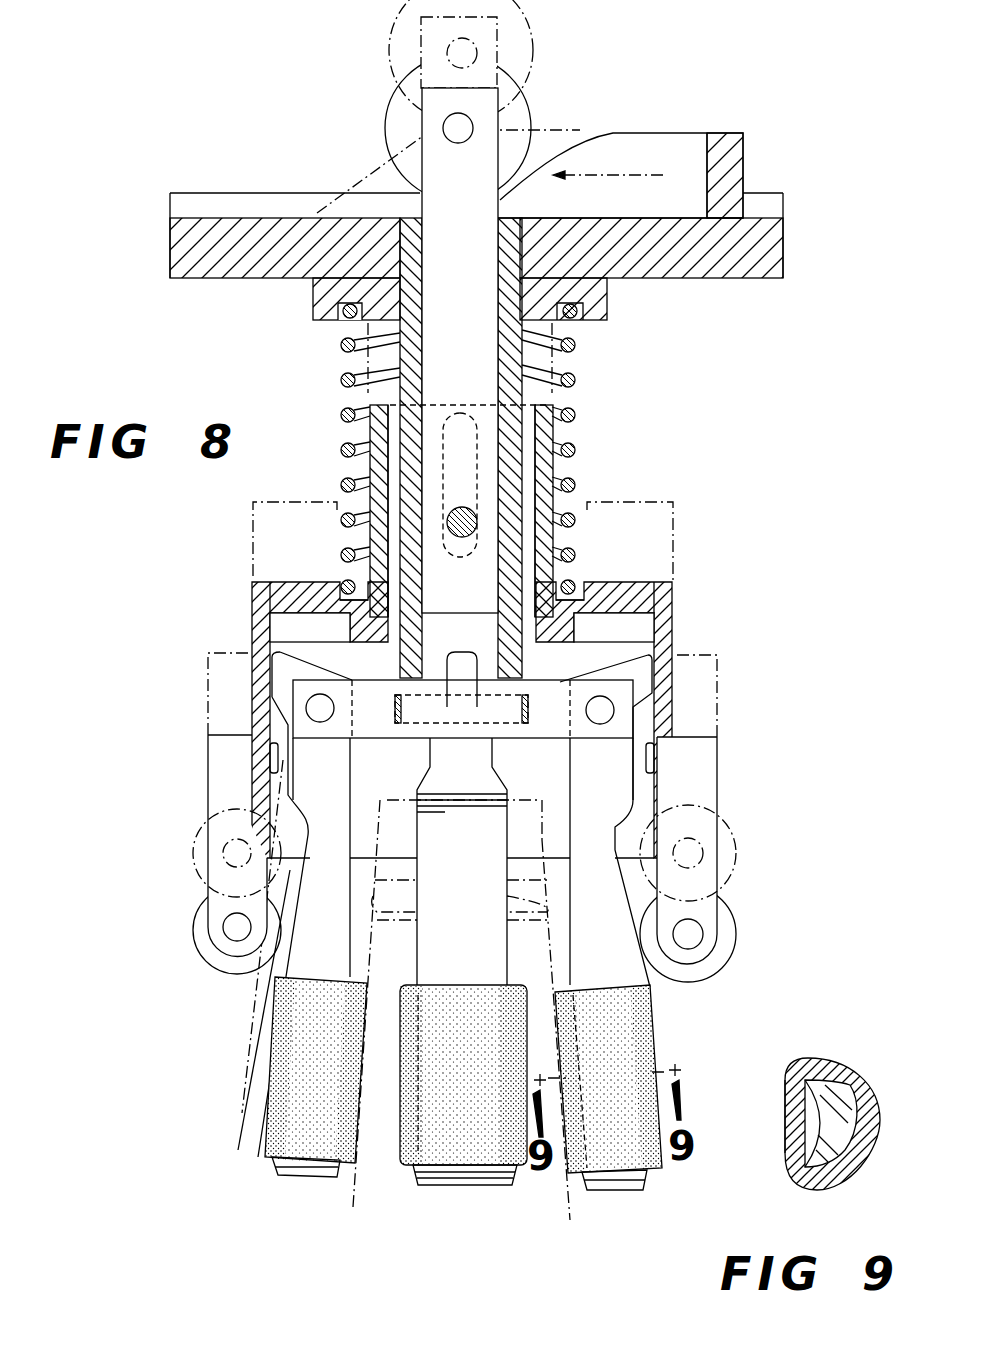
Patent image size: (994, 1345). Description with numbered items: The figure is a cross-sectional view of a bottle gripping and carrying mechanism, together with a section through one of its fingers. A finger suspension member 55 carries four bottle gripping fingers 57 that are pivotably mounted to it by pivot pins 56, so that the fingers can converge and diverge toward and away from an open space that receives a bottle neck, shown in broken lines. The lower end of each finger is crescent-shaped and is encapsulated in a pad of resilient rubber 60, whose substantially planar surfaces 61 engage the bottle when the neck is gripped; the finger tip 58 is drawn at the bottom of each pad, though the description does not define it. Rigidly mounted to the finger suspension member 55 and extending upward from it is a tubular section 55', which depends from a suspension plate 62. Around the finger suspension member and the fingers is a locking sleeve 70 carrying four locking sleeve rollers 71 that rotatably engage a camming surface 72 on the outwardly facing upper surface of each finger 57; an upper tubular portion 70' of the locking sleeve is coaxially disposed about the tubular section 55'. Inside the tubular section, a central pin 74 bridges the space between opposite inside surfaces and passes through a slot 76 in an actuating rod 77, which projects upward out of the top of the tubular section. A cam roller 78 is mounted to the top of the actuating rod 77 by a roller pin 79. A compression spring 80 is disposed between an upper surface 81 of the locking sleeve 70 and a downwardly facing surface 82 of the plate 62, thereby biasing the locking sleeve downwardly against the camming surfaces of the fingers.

In FIG. 8, the finger suspension member 55 is at (463, 817).
In FIG. 8, the tubular section 55' is at (486, 458).
In FIG. 8, the pivot pins 56 is at (325, 700).
In FIG. 8, the bottle gripping fingers 57 is at (333, 952).
In FIG. 8, the nozzle tip 58 is at (312, 1178).
In FIG. 9, the nozzle tip 58 is at (842, 1108).
In FIG. 8, the pad of resilient rubber 60 is at (445, 988).
In FIG. 9, the pad of resilient rubber 60 is at (818, 1060).
In FIG. 9, the substantially planar surfaces 61 is at (785, 1105).
In FIG. 8, the suspension plate 62 is at (611, 283).
In FIG. 8, the locking sleeve 70 is at (477, 680).
In FIG. 8, the upper tubular portion 70' is at (425, 511).
In FIG. 8, the locking sleeve rollers 71 is at (205, 945).
In FIG. 8, the camming surface 72 is at (292, 888).
In FIG. 8, the central pin 74 is at (462, 537).
In FIG. 8, the slot 76 is at (442, 416).
In FIG. 8, the actuating rod 77 is at (472, 283).
In FIG. 8, the cam roller 78 is at (533, 43).
In FIG. 8, the roller pin 79 is at (458, 118).
In FIG. 8, the compression spring 80 is at (572, 418).
In FIG. 8, the upper surface 81 is at (580, 588).
In FIG. 8, the downwardly facing surface 82 is at (657, 133).